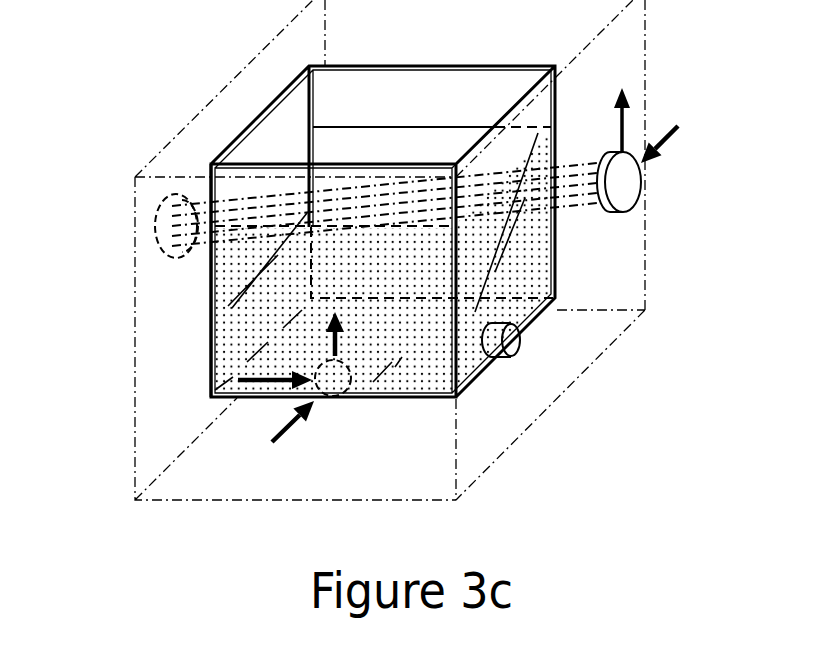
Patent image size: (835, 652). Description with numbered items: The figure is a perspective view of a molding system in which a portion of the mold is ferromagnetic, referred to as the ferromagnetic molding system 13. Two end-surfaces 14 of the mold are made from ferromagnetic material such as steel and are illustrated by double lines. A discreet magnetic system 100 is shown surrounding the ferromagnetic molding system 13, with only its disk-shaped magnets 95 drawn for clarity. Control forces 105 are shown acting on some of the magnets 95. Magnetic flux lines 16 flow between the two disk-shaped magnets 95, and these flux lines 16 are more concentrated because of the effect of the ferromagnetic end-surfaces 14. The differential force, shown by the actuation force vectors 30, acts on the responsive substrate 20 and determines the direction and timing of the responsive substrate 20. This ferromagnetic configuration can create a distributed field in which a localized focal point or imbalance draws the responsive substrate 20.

The discreet magnetic system 100 is at (544, 452).
The ferromagnetic molding system 13 is at (560, 348).
The end-surfaces 14 is at (209, 383).
The magnetic flux lines 16 is at (257, 183).
The responsive substrate 20 is at (323, 362).
The actuation force vectors 30 is at (223, 361).
The disk-shaped magnets 95 is at (630, 210).
The control forces 105 is at (674, 106).